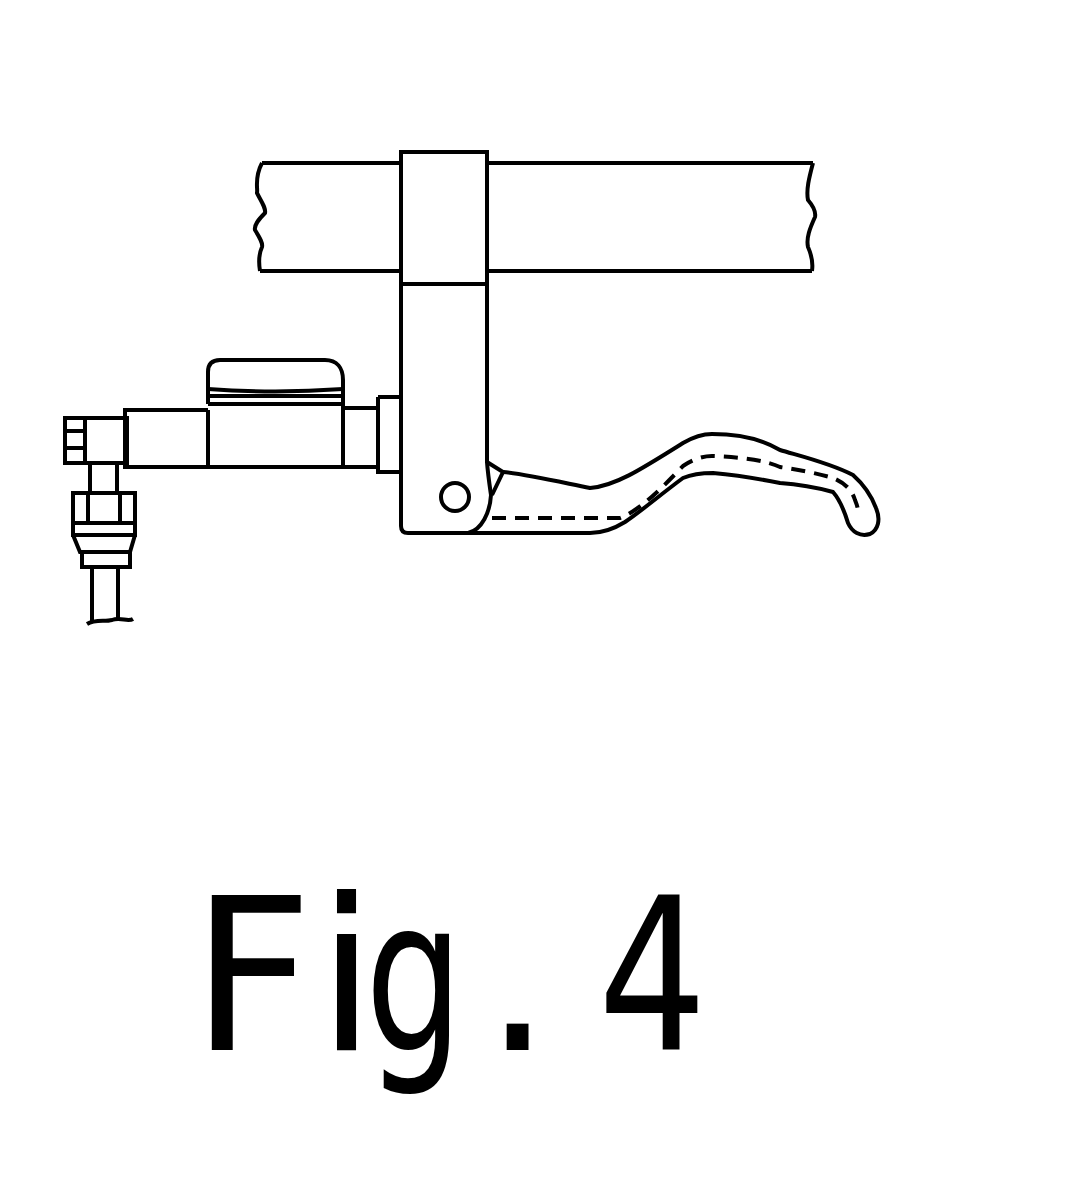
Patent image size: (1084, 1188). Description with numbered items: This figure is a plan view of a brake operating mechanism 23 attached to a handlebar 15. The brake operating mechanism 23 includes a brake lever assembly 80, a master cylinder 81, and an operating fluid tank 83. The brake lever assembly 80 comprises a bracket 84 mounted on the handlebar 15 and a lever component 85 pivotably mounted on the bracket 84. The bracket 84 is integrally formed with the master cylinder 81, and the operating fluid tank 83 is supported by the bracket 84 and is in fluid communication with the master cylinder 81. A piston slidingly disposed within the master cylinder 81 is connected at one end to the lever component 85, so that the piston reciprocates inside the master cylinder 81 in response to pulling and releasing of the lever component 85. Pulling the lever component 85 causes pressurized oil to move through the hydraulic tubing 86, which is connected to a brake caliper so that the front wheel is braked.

The handlebar 15 is at (697, 162).
The brake operating mechanism 23 is at (571, 116).
The brake lever assembly 80 is at (673, 463).
The master cylinder 81 is at (188, 463).
The operating fluid tank 83 is at (207, 370).
The bracket 84 is at (486, 359).
The lever component 85 is at (682, 442).
The hydraulic tubing 86 is at (120, 600).